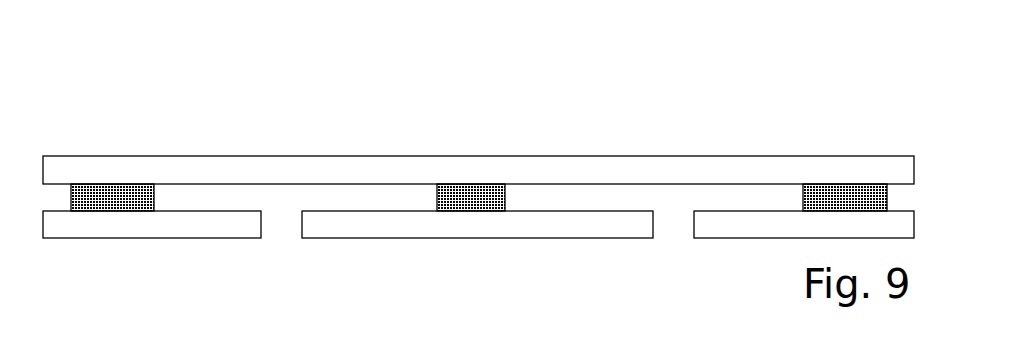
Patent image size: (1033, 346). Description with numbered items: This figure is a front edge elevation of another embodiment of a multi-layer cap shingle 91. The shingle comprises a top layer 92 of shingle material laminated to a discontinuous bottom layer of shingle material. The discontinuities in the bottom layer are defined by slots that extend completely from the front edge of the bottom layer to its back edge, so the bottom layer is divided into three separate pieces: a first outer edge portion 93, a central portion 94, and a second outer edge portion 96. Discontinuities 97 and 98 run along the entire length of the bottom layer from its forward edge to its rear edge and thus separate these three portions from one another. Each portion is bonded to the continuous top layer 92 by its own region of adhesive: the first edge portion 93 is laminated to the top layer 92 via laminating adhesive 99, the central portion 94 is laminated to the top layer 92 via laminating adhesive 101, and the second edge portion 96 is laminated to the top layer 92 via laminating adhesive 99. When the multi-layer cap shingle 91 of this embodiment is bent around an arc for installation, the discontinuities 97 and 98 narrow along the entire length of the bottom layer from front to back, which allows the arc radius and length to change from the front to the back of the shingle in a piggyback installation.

The multi-layer cap shingle 91 is at (826, 100).
The top layer 92 is at (693, 162).
The first outer edge portion 93 is at (747, 231).
The central portion 94 is at (392, 230).
The second outer edge portion 96 is at (182, 231).
The discontinuity 97 is at (672, 225).
The discontinuity 98 is at (278, 231).
The laminating adhesive 99 is at (124, 190).
The laminating adhesive 101 is at (461, 187).